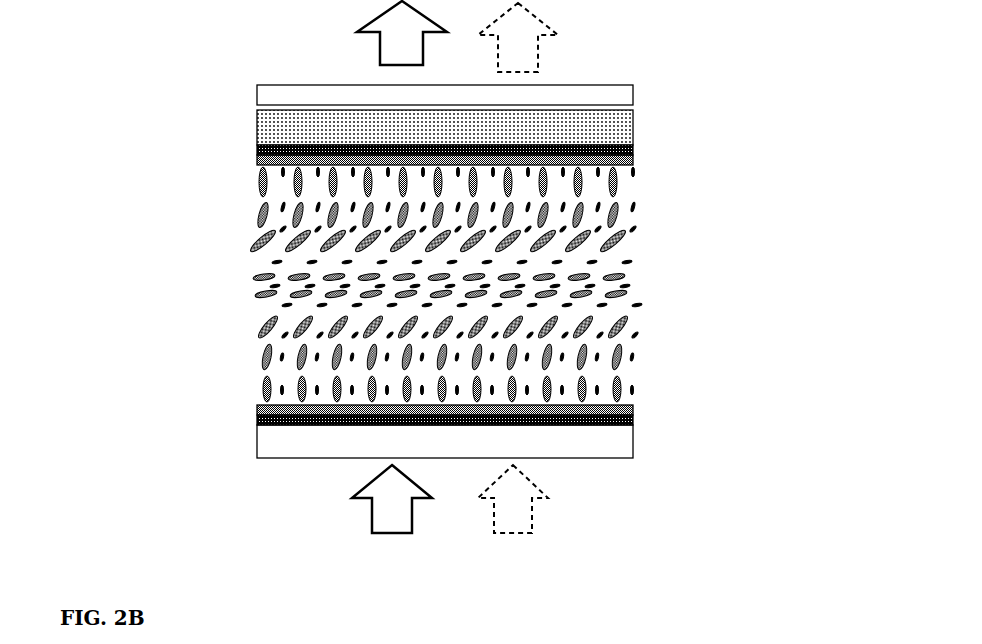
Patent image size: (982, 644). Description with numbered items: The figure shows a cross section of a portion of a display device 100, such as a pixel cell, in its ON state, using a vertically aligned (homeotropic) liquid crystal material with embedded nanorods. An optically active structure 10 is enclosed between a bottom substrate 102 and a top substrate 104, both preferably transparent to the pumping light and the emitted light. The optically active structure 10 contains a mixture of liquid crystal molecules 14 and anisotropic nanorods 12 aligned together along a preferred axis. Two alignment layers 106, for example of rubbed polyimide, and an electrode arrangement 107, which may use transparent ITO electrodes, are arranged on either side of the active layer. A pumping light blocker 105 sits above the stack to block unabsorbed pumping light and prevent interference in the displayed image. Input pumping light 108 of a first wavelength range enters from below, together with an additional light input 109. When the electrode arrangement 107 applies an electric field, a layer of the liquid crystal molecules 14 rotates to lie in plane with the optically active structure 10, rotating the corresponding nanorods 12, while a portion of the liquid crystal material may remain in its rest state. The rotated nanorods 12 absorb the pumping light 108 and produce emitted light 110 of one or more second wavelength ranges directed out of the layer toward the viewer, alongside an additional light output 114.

The display device 100 is at (194, 94).
The bottom substrate 102 is at (633, 140).
The top substrate 104 is at (633, 432).
The pumping light blocker 105 is at (633, 95).
The alignment layer 106 is at (257, 163).
The electrode arrangement 107 is at (257, 148).
The input pumping light 108 is at (388, 518).
The additional light input 109 is at (495, 530).
The emitted light 110 is at (380, 48).
The additional light output 114 is at (538, 45).
The optically active structure 10 is at (245, 343).
The nanorods 12 is at (515, 281).
The liquid crystal molecules 14 is at (407, 284).